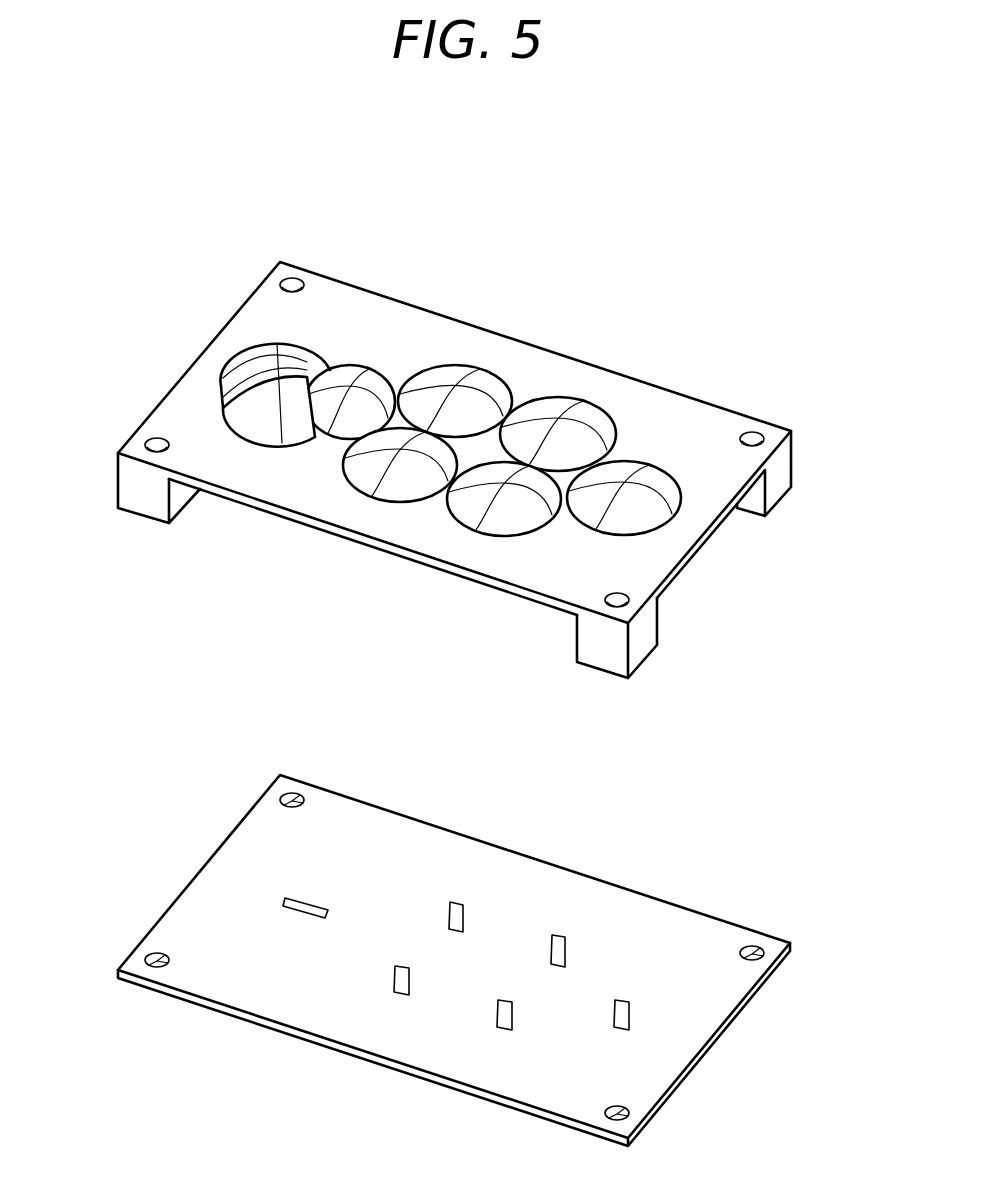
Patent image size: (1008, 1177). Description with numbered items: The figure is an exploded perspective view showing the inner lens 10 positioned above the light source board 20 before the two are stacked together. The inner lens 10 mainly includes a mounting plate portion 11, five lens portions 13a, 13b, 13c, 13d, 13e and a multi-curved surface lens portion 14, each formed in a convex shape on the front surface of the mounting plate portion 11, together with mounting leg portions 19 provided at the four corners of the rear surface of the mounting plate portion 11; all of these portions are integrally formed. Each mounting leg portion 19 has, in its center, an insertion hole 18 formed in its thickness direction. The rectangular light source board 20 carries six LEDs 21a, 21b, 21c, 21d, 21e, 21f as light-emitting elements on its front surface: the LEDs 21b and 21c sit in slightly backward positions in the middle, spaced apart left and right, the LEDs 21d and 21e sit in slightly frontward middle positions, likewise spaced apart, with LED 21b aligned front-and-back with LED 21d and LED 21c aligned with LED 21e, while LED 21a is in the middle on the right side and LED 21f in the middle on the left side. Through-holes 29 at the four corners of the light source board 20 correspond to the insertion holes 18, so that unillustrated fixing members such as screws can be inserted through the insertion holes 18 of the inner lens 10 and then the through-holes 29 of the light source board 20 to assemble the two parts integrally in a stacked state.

The inner lens 10 is at (227, 229).
The mounting plate portion 11 is at (662, 566).
The lens portion 13a is at (660, 531).
The lens portion 13b is at (612, 413).
The lens portion 13c is at (498, 370).
The lens portion 13d is at (456, 531).
The lens portion 13e is at (358, 492).
The multi-curved surface lens portion 14 is at (222, 372).
The insertion hole 18 is at (301, 280).
The mounting leg portion 19 is at (137, 495).
The light source board 20 is at (197, 793).
The LED 21a is at (630, 1015).
The LED 21b is at (567, 945).
The LED 21c is at (465, 910).
The LED 21d is at (496, 1033).
The LED 21e is at (395, 985).
The LED 21f is at (283, 900).
The through-hole 29 is at (293, 800).